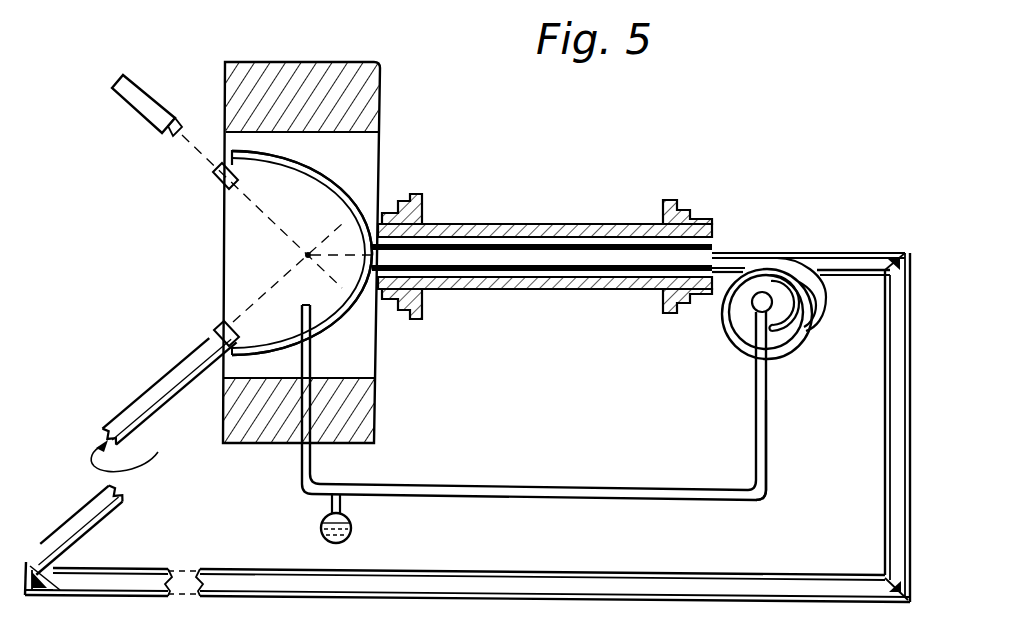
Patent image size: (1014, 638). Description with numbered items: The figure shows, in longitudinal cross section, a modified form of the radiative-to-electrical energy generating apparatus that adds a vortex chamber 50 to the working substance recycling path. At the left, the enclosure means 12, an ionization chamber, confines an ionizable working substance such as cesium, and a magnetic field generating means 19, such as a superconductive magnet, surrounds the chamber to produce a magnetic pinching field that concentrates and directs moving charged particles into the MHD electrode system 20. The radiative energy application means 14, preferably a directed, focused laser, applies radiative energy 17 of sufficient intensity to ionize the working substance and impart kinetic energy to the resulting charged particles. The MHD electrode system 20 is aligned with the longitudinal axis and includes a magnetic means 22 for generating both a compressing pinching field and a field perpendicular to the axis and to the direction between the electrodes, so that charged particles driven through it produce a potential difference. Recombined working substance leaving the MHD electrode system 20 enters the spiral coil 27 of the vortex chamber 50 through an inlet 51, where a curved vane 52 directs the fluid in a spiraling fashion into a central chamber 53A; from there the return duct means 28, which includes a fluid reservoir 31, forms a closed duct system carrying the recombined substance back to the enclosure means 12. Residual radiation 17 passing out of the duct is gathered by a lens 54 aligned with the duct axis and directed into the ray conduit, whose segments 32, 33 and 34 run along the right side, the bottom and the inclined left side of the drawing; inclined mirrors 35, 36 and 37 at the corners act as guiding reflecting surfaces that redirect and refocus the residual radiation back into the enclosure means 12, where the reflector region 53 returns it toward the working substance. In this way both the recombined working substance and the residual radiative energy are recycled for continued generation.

The enclosure means 12 is at (342, 183).
The radiative energy application means 14 is at (145, 124).
The radiative energy 17 is at (728, 242).
The magnetic field generating means 19 is at (280, 62).
The MHD electrode system 20 is at (542, 228).
The magnetic means 22 is at (535, 290).
The coil 27 is at (790, 265).
The return duct means 28 is at (768, 447).
The fluid reservoir 31 is at (351, 533).
The segment of ray conduit means 32 is at (884, 497).
The segment of ray conduit means 33 is at (230, 603).
The segment of ray conduit means 34 is at (114, 425).
The inclined mirror 35 is at (884, 256).
The inclined mirror 36 is at (880, 594).
The inclined mirror 37 is at (68, 588).
The vortex chamber 50 is at (793, 348).
The inlet 51 is at (790, 268).
The curved vane 52 is at (803, 318).
The reflector cavity 53 is at (252, 258).
The central chamber 53A is at (306, 308).
The lens 54 is at (806, 270).